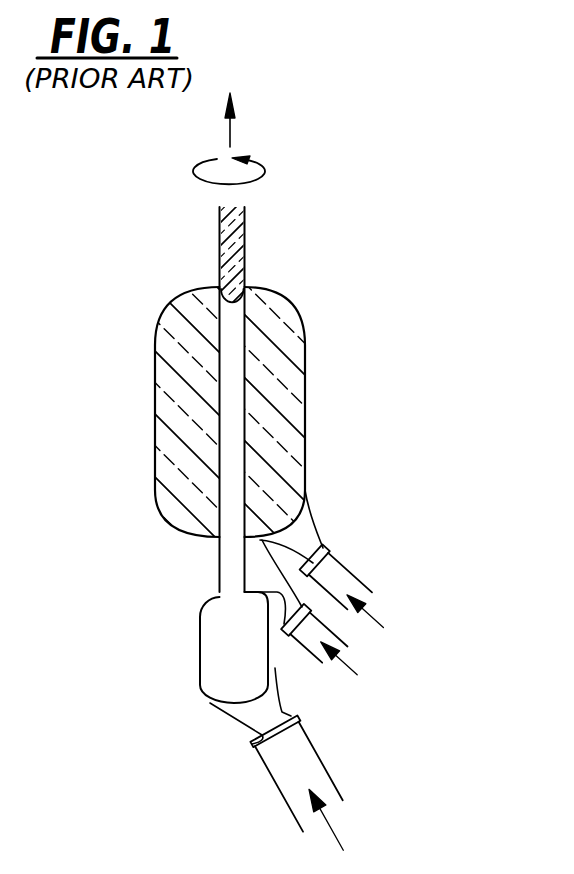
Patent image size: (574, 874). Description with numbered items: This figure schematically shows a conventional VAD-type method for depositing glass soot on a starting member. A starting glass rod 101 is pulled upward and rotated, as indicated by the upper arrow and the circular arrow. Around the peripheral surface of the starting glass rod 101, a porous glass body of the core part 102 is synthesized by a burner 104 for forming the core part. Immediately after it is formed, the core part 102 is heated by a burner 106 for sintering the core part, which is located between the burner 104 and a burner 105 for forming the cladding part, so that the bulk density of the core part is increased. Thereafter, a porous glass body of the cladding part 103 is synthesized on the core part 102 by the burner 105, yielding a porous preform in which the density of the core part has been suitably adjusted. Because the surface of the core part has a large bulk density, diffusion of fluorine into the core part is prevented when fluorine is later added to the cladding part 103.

The starting glass rod 101 is at (244, 240).
The core part 102 is at (234, 368).
The cladding part 103 is at (278, 428).
The burner for forming the core part 104 is at (282, 772).
The burner for forming the cladding part 105 is at (337, 578).
The burner for sintering the core part 106 is at (310, 648).